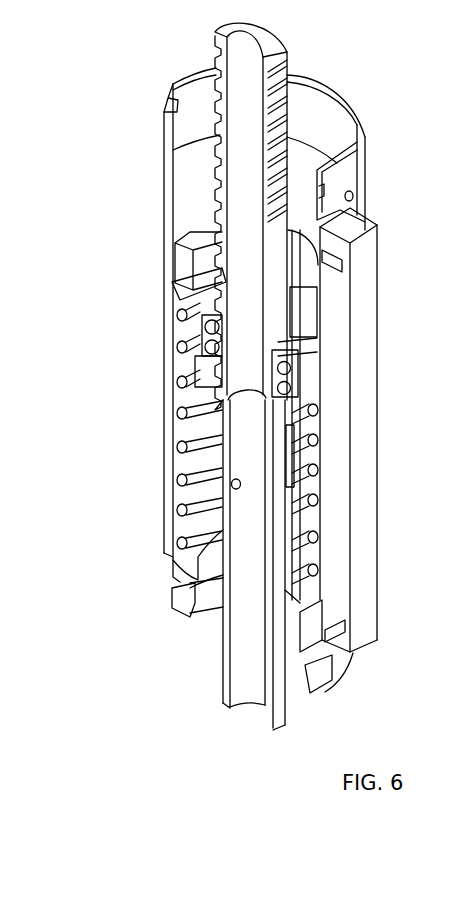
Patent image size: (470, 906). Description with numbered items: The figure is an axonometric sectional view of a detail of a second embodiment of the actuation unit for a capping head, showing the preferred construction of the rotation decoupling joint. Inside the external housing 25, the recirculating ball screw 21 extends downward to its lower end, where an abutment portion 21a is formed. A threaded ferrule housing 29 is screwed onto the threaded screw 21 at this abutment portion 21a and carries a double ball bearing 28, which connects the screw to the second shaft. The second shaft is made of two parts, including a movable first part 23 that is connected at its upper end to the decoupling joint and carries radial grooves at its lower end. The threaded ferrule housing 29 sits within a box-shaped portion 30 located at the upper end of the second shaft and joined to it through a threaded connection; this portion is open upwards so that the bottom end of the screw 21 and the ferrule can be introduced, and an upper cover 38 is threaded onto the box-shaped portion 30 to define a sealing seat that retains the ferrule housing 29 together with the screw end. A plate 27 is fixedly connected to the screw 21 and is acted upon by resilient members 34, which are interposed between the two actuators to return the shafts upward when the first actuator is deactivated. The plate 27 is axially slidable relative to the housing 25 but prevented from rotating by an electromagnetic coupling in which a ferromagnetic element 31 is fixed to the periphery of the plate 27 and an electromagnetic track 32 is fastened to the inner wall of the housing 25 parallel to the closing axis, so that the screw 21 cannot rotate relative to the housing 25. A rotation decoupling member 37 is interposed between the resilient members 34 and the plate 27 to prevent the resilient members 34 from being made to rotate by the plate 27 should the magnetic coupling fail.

The recirculating ball screw 21 is at (221, 176).
The abutment portion 21a is at (222, 396).
The movable first part 23 is at (223, 624).
The housing 25 is at (168, 432).
The plate 27 is at (188, 263).
The double ball bearing 28 is at (292, 388).
The threaded ferrule housing 29 is at (300, 413).
The box-shaped portion 30 is at (196, 378).
The ferromagnetic element 31 is at (308, 315).
The electromagnetic track 32 is at (335, 325).
The resilient members 34 is at (182, 503).
The rotation decoupling member 37 is at (178, 282).
The upper cover 38 is at (202, 323).